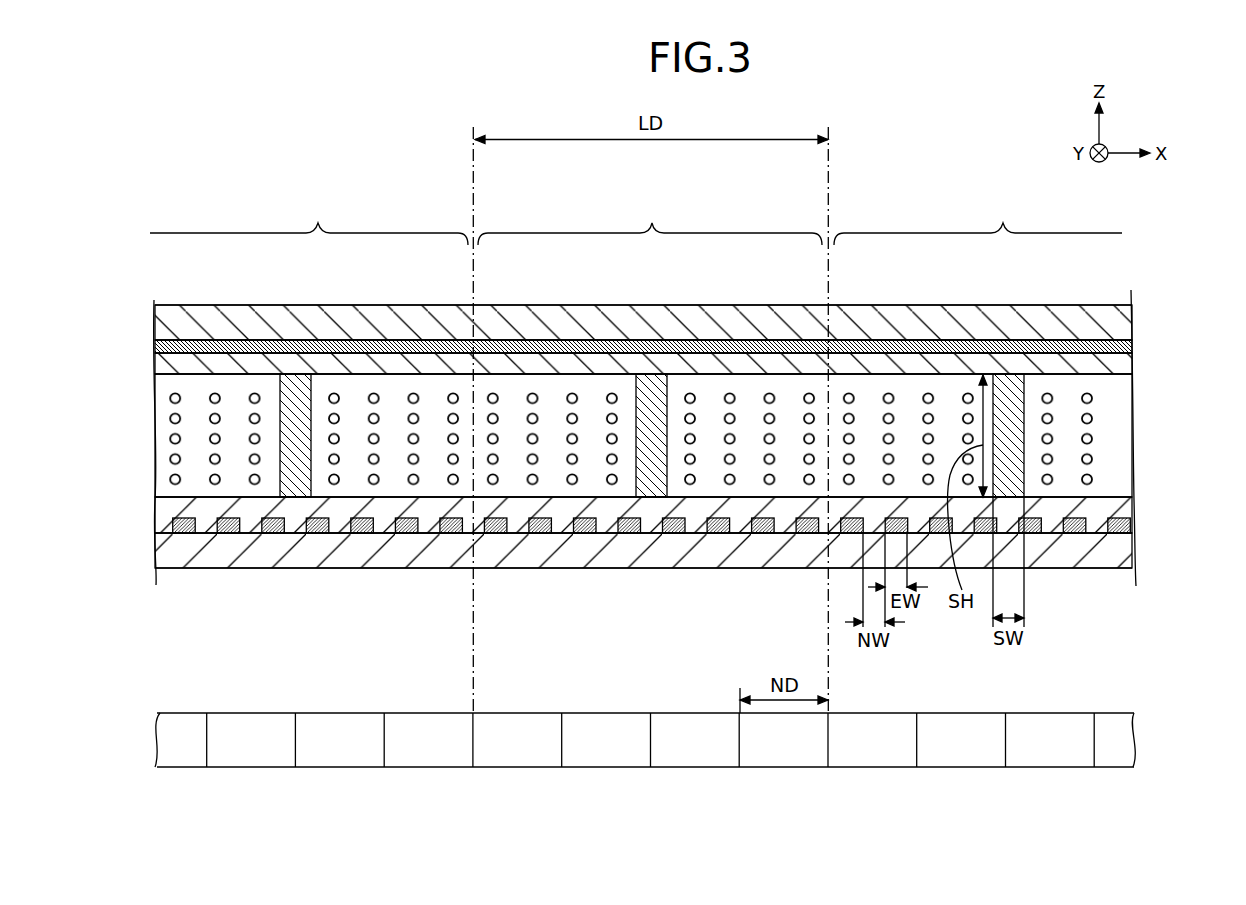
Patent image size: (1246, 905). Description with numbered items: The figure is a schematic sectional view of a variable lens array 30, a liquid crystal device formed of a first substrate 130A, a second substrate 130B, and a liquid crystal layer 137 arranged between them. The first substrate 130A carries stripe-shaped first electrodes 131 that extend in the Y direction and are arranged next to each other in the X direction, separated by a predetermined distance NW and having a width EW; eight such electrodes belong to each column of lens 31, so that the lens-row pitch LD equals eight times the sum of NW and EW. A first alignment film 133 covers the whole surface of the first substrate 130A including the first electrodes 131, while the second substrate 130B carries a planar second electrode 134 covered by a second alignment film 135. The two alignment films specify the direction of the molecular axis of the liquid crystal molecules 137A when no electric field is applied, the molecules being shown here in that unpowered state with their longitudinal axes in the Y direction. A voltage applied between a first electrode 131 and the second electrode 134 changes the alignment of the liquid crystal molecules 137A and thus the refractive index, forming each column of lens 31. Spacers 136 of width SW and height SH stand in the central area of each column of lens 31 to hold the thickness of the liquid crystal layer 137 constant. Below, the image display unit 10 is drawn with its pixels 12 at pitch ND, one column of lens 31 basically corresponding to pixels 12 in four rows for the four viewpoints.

The image display unit 10 is at (672, 762).
The pixel 12 is at (181, 767).
The variable lens array 30 is at (938, 150).
The column of lens 31 is at (636, 218).
The first substrate 130A is at (1118, 553).
The second substrate 130B is at (1118, 321).
The first electrode 131 is at (184, 533).
The first alignment film 133 is at (1118, 510).
The second electrode 134 is at (1118, 347).
The second alignment film 135 is at (1118, 366).
The spacer 136 is at (300, 374).
The liquid crystal layer 137 is at (1118, 457).
The liquid crystal molecules 137A is at (1092, 398).